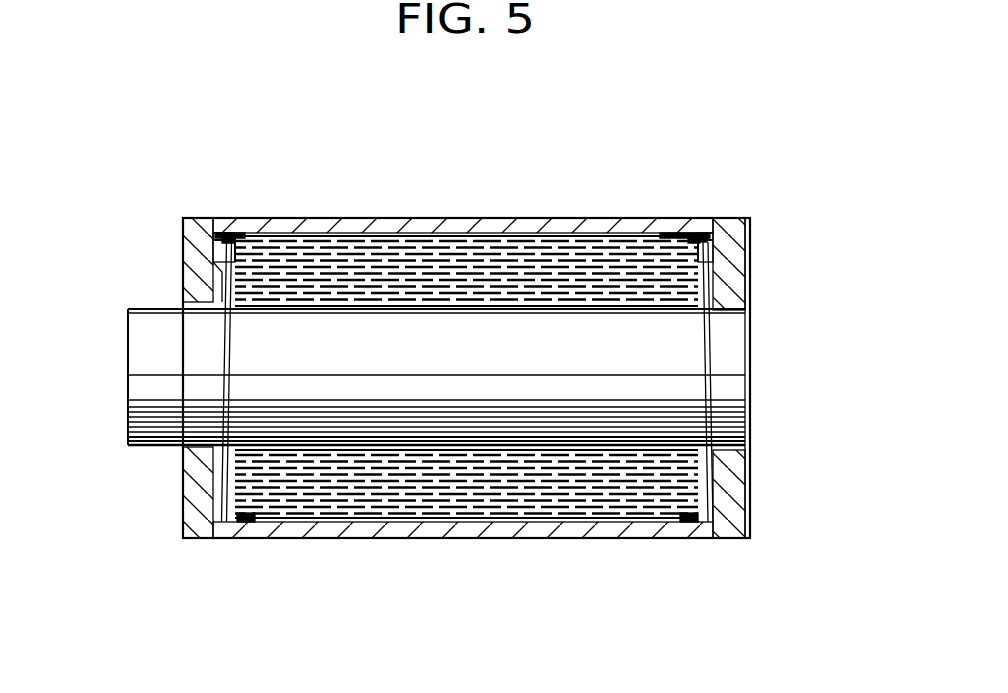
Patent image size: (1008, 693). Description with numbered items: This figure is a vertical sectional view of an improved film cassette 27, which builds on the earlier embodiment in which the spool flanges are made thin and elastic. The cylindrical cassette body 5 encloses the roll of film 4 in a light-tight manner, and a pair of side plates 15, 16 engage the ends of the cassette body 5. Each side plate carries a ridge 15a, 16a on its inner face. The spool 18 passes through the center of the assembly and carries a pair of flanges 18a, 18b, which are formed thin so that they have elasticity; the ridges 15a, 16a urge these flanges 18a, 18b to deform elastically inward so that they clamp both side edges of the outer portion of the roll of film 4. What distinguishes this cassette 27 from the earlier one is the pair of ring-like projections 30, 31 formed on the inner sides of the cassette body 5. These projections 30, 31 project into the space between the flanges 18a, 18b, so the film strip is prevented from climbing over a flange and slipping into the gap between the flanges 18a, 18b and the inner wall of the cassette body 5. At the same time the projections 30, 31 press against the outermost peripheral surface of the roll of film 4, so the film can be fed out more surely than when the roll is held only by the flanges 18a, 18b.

The film cassette 27 is at (414, 164).
The roll of film 4 is at (549, 218).
The cassette body 5 is at (462, 540).
The side plate 15 is at (730, 496).
The ridge 15a is at (722, 258).
The side plate 16 is at (190, 489).
The ridge 16a is at (213, 255).
The spool 18 is at (148, 378).
The flange 18a is at (715, 363).
The flange 18b is at (232, 372).
The ring-like projection 30 is at (654, 218).
The ring-like projection 31 is at (286, 218).